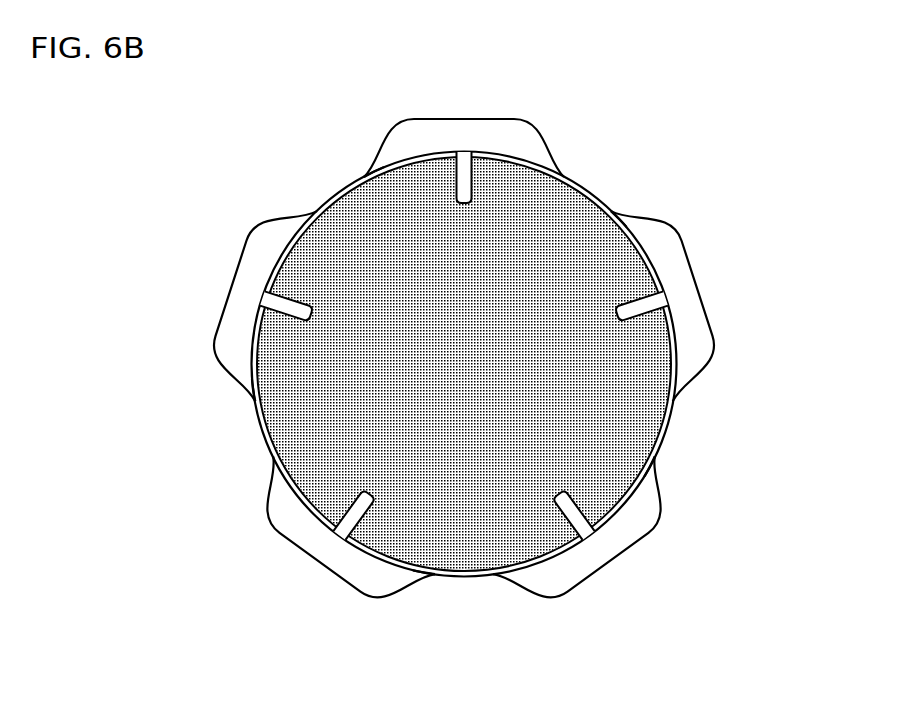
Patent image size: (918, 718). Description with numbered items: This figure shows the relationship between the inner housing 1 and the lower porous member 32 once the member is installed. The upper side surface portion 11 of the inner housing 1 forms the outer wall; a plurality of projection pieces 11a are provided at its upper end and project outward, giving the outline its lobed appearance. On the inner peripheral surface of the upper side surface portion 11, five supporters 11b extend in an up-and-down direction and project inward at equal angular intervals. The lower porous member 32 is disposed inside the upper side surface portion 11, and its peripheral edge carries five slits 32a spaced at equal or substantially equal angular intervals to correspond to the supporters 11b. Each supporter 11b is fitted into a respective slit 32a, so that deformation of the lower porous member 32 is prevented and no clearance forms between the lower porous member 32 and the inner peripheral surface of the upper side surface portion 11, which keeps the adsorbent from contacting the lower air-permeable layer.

The inner housing 1 is at (622, 210).
The upper side surface portion 11 is at (583, 187).
The projection piece 11a is at (508, 137).
The supporter 11b is at (460, 187).
The lower porous member 32 is at (640, 430).
The slit 32a is at (462, 168).